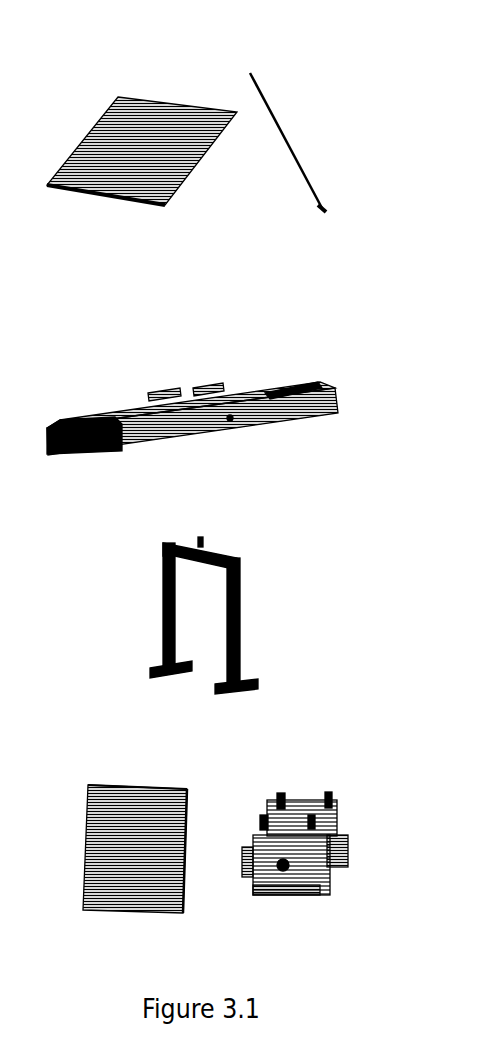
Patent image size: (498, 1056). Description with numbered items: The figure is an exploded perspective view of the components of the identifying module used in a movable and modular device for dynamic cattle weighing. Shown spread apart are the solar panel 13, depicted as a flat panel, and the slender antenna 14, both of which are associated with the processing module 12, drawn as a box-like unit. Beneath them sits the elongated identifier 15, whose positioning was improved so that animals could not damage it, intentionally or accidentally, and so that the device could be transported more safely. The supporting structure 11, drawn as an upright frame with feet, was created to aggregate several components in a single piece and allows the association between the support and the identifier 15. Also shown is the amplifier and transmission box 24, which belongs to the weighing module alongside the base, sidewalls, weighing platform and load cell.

The supporting structure 11 is at (262, 618).
The processing module 12 is at (72, 830).
The solar panel 13 is at (87, 118).
The antenna 14 is at (298, 133).
The identifier 15 is at (148, 372).
The amplifier and transmission box 24 is at (340, 802).